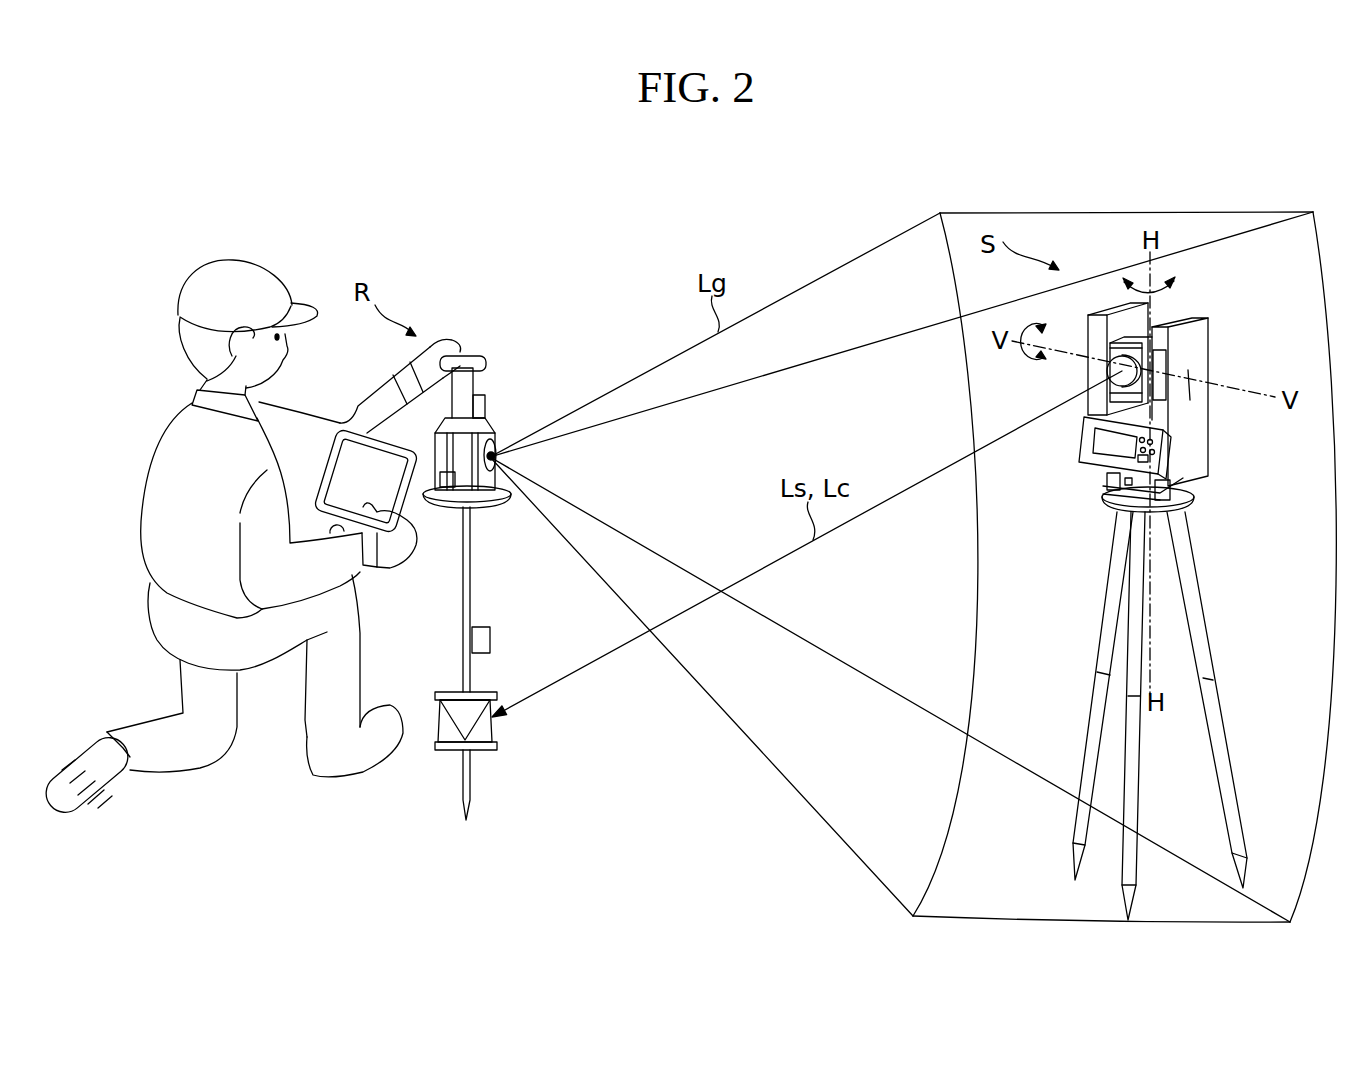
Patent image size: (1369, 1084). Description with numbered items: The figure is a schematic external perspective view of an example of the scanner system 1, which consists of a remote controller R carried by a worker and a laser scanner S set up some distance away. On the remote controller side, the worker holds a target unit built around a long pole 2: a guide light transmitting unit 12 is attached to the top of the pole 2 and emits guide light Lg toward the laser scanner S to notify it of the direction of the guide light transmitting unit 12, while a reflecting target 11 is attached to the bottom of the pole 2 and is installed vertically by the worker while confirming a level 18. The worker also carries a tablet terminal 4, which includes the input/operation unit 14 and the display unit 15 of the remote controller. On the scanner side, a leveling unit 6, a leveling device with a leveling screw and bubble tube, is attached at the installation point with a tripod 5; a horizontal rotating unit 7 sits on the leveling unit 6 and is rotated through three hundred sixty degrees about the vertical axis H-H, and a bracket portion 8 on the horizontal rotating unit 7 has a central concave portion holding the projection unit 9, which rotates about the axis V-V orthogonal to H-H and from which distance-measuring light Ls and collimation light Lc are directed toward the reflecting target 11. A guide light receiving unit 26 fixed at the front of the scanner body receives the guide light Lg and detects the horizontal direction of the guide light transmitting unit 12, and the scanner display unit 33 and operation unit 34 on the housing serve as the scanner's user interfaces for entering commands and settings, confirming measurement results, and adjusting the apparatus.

The system 1 is at (258, 160).
The pole 2 is at (472, 546).
The tablet terminal 4 is at (373, 427).
The tripod 5 is at (1202, 567).
The leveling unit 6 is at (1103, 493).
The horizontal rotating unit 7 is at (1103, 473).
The bracket portion 8 is at (1208, 345).
The projection unit 9 is at (1104, 375).
The reflecting target 11 is at (497, 722).
The guide light transmitting unit 12 is at (496, 438).
The input/operation unit 14 is at (352, 455).
The display unit 15 is at (350, 463).
The level 18 is at (495, 640).
The guide light receiving unit 26 is at (1170, 390).
The scanner display unit 33 is at (1080, 433).
The operation unit 34 is at (1162, 462).